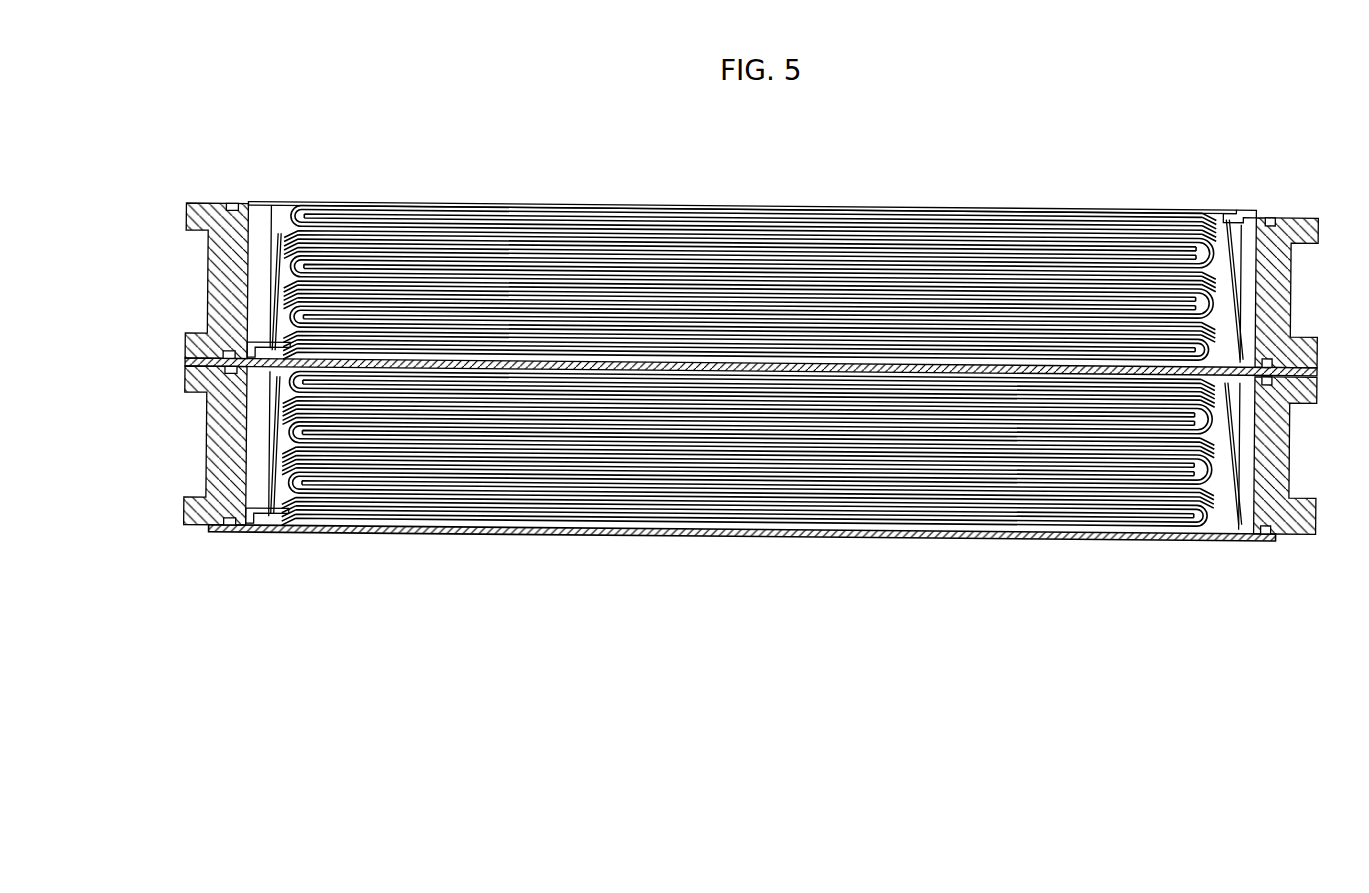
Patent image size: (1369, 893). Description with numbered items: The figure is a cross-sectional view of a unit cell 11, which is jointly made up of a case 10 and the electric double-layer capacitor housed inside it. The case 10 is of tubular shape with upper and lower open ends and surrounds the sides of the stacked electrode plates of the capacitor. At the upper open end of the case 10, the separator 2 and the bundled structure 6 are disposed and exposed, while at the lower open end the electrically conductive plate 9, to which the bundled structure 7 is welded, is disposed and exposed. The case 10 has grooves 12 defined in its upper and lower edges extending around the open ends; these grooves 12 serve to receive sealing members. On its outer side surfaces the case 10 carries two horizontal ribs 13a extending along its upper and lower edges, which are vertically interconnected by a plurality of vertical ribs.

The separator 2 is at (630, 208).
The bundled structure 6 is at (1240, 200).
The bundled structure 7 is at (273, 375).
The electrically conductive plate 9 is at (680, 375).
The case 10 is at (1306, 216).
The unit cell 11 is at (970, 180).
The grooves 12 is at (232, 205).
The horizontal ribs 13a is at (206, 232).